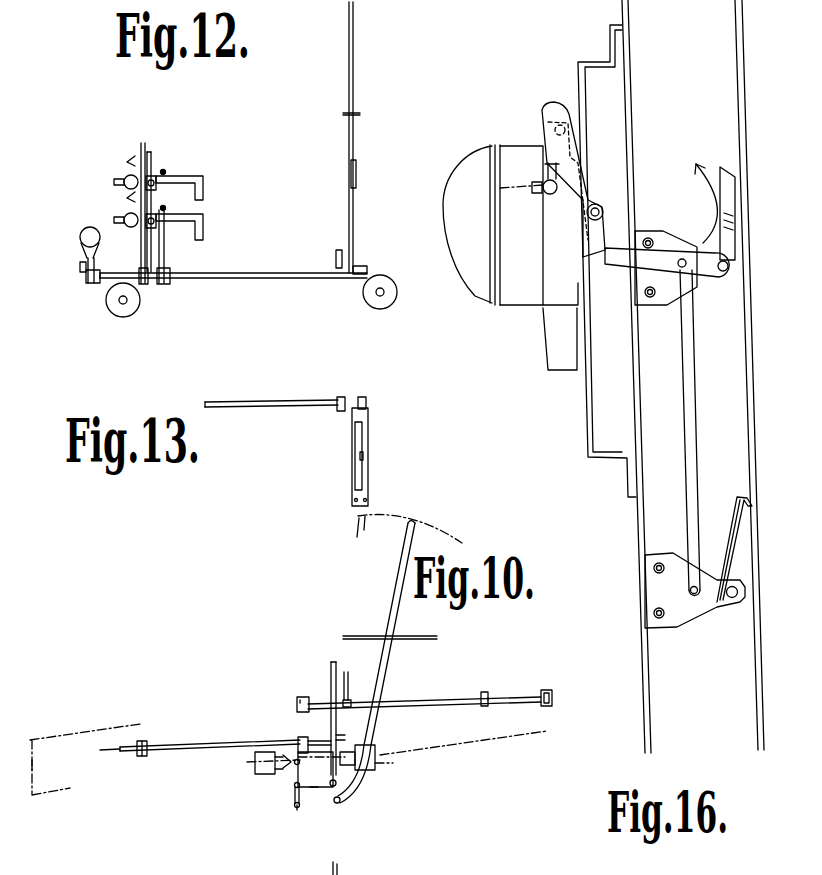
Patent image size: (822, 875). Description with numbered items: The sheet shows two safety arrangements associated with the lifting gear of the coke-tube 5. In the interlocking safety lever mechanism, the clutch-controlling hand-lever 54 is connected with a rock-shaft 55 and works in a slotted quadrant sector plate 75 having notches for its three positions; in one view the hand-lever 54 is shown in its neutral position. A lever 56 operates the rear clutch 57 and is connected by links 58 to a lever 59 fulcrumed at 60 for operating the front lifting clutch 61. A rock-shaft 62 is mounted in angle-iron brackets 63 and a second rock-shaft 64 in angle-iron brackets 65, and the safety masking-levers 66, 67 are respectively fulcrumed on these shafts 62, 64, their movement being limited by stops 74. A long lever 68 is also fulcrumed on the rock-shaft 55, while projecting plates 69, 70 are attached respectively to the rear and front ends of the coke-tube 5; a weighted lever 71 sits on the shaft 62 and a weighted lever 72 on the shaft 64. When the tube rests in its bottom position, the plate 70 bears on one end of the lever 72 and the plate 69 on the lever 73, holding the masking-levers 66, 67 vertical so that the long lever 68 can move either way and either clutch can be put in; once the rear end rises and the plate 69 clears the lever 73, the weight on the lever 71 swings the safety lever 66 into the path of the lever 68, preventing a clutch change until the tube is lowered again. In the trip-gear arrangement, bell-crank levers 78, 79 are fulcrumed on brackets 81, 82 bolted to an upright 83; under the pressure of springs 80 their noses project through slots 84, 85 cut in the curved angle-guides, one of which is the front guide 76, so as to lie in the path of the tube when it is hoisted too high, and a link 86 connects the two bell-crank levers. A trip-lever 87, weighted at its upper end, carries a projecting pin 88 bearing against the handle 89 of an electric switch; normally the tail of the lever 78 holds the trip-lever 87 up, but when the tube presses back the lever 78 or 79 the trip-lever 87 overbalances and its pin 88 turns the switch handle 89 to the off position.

In FIG. 10, the coke-tube 5 is at (142, 803).
In FIG. 12, the clutch-controlling hand-lever 54 is at (354, 98).
In FIG. 13, the clutch-controlling hand-lever 54 is at (364, 458).
In FIG. 10, the clutch-controlling hand-lever 54 is at (386, 666).
In FIG. 12, the rock-shaft 55 is at (245, 277).
In FIG. 13, the rock-shaft 55 is at (242, 407).
In FIG. 10, the rock-shaft 55 is at (340, 800).
In FIG. 12, the lever 56 is at (92, 287).
In FIG. 10, the lever 56 is at (331, 782).
In FIG. 10, the rear clutch 57 is at (345, 751).
In FIG. 12, the links 58 is at (87, 270).
In FIG. 10, the links 58 is at (312, 789).
In FIG. 10, the lever 59 is at (293, 790).
In FIG. 10, the fulcrum 60 is at (296, 808).
In FIG. 10, the front lifting clutch 61 is at (287, 768).
In FIG. 10, the rock-shaft 62 is at (448, 703).
In FIG. 10, the angle-iron brackets 63 is at (297, 703).
In FIG. 10, the second rock-shaft 64 is at (197, 748).
In FIG. 12, the angle-iron brackets 65 is at (160, 220).
In FIG. 10, the angle-iron brackets 65 is at (136, 753).
In FIG. 12, the safety masking-lever 66 is at (149, 158).
In FIG. 10, the safety masking-lever 66 is at (346, 696).
In FIG. 12, the safety masking-lever 67 is at (153, 206).
In FIG. 10, the safety masking-lever 67 is at (334, 730).
In FIG. 12, the long lever 68 is at (142, 150).
In FIG. 10, the long lever 68 is at (330, 670).
In FIG. 12, the projecting plate 69 is at (199, 177).
In FIG. 10, the projecting plate 69 is at (407, 693).
In FIG. 12, the projecting plate 70 is at (202, 205).
In FIG. 10, the projecting plate 70 is at (117, 749).
In FIG. 12, the weighted lever 71 is at (122, 186).
In FIG. 10, the weighted lever 71 is at (294, 700).
In FIG. 12, the weighted lever 72 is at (118, 227).
In FIG. 10, the weighted lever 72 is at (147, 755).
In FIG. 12, the lever 73 is at (168, 178).
In FIG. 10, the lever 73 is at (485, 703).
In FIG. 12, the stops 74 is at (165, 171).
In FIG. 12, the slotted quadrant sector plate 75 is at (347, 117).
In FIG. 13, the slotted quadrant sector plate 75 is at (357, 442).
In FIG. 10, the slotted quadrant sector plate 75 is at (357, 637).
In FIG. 16, the angle guide 76 is at (755, 670).
In FIG. 16, the bell-crank lever 78 is at (731, 227).
In FIG. 16, the bell-crank lever 79 is at (737, 553).
In FIG. 16, the springs 80 is at (697, 164).
In FIG. 16, the bracket 81 is at (660, 240).
In FIG. 16, the bracket 82 is at (680, 613).
In FIG. 16, the upright 83 is at (644, 728).
In FIG. 16, the slot 84 is at (746, 182).
In FIG. 16, the slot 85 is at (752, 507).
In FIG. 16, the link 86 is at (689, 453).
In FIG. 16, the trip-lever 87 is at (577, 172).
In FIG. 16, the projecting pin 88 is at (567, 127).
In FIG. 16, the switch handle 89 is at (543, 138).